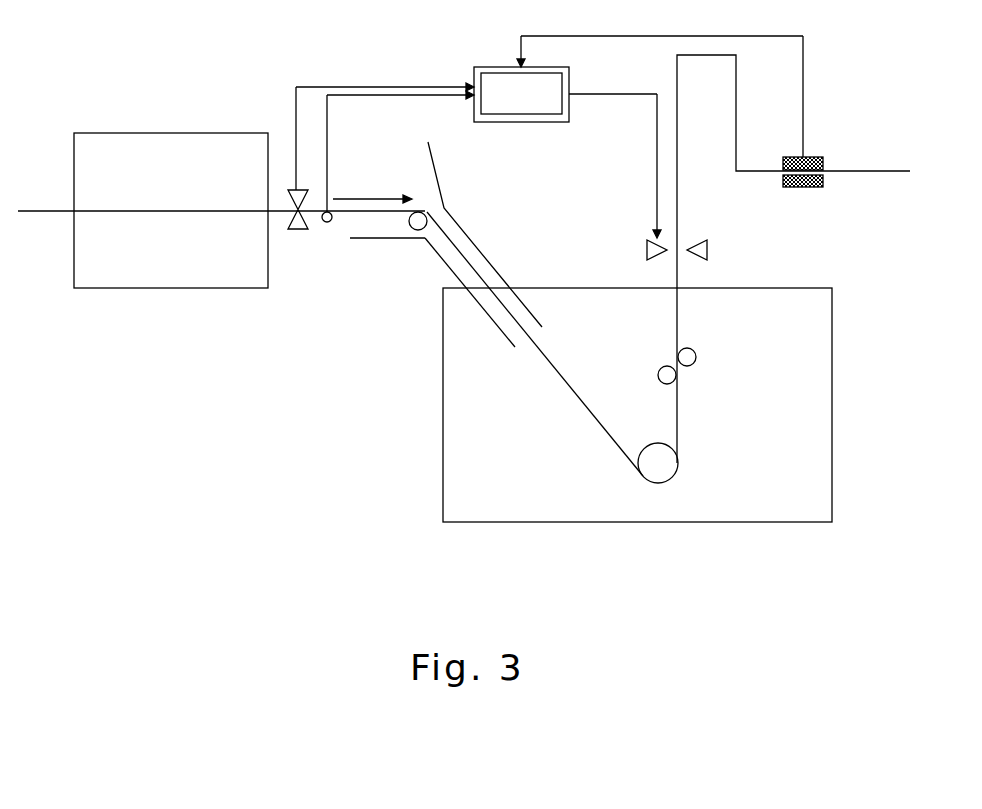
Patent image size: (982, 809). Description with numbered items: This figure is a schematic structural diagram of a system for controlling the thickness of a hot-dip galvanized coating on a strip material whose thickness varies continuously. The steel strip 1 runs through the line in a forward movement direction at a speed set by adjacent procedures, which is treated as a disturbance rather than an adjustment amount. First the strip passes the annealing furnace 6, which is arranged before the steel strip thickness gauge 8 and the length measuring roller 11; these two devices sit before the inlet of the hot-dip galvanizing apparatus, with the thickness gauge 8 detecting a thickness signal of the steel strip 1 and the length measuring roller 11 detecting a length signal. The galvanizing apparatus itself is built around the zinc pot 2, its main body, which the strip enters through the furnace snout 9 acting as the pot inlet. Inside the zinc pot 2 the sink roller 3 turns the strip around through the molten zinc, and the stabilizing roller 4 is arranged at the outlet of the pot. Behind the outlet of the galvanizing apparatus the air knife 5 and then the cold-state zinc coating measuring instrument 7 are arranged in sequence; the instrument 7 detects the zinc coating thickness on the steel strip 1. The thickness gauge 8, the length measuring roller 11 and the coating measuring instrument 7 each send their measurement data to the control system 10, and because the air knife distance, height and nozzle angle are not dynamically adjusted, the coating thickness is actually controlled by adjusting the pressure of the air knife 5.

The steel strip 1 is at (372, 178).
The zinc pot 2 is at (637, 405).
The sink roller 3 is at (658, 479).
The stabilizing roller 4 is at (682, 375).
The air knife 5 is at (647, 181).
The annealing furnace 6 is at (171, 210).
The cold-state zinc coating measuring instrument 7 is at (793, 259).
The steel strip thickness gauge 8 is at (381, 178).
The furnace snout 9 is at (475, 234).
The control system 10 is at (638, 101).
The length measuring roller 11 is at (415, 219).